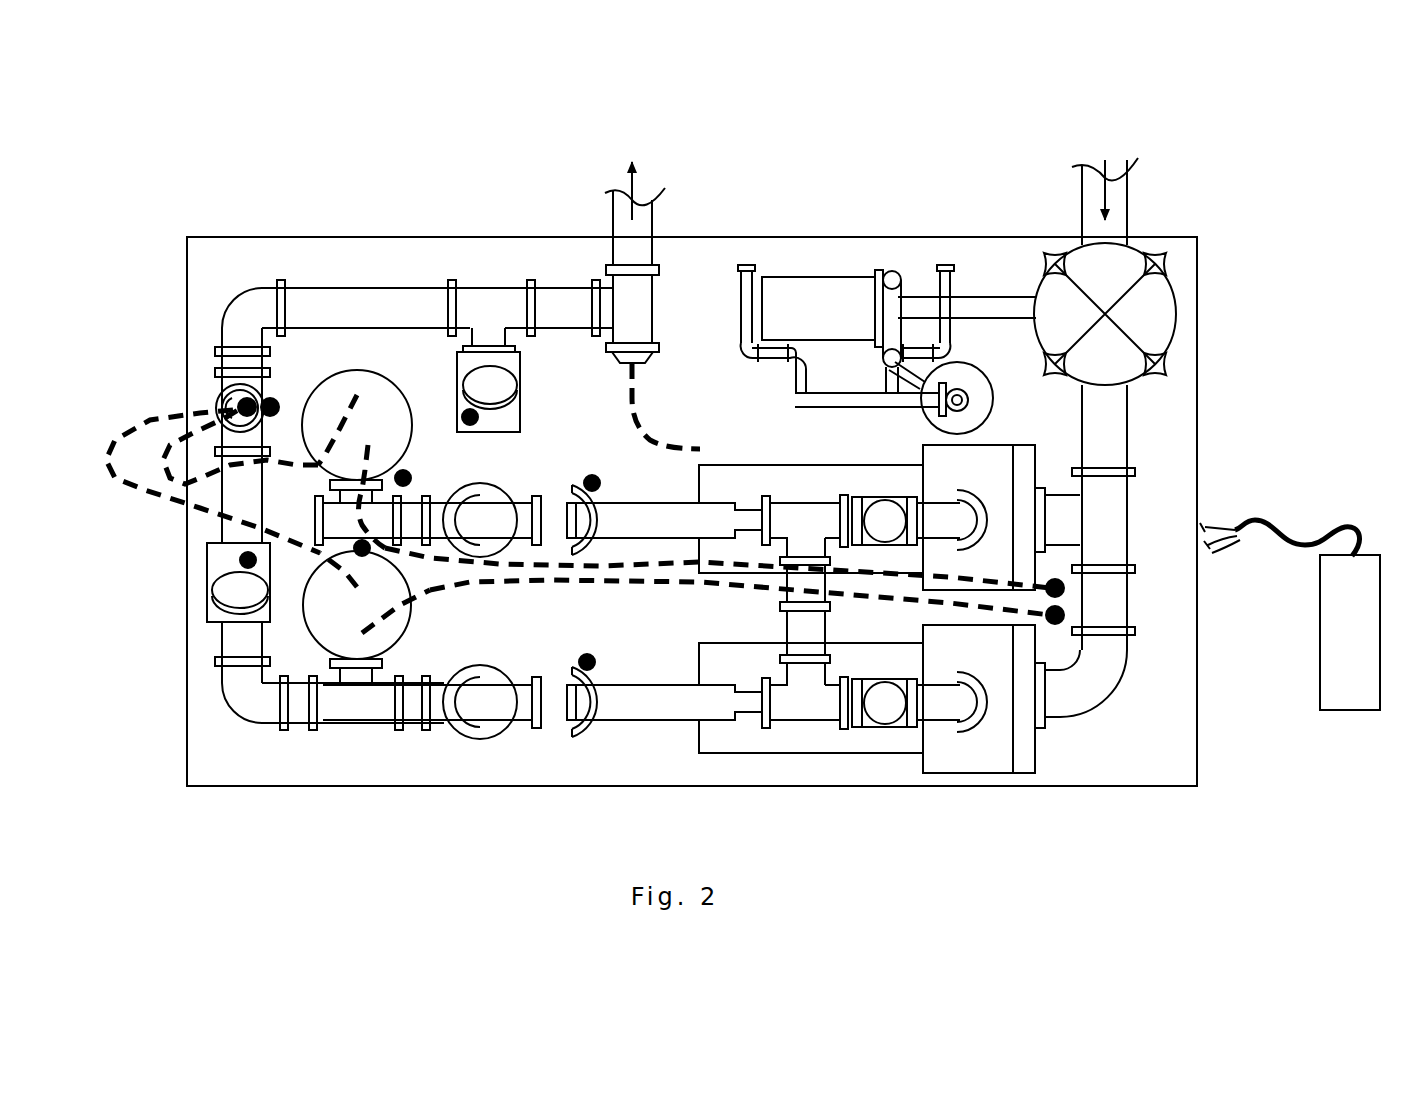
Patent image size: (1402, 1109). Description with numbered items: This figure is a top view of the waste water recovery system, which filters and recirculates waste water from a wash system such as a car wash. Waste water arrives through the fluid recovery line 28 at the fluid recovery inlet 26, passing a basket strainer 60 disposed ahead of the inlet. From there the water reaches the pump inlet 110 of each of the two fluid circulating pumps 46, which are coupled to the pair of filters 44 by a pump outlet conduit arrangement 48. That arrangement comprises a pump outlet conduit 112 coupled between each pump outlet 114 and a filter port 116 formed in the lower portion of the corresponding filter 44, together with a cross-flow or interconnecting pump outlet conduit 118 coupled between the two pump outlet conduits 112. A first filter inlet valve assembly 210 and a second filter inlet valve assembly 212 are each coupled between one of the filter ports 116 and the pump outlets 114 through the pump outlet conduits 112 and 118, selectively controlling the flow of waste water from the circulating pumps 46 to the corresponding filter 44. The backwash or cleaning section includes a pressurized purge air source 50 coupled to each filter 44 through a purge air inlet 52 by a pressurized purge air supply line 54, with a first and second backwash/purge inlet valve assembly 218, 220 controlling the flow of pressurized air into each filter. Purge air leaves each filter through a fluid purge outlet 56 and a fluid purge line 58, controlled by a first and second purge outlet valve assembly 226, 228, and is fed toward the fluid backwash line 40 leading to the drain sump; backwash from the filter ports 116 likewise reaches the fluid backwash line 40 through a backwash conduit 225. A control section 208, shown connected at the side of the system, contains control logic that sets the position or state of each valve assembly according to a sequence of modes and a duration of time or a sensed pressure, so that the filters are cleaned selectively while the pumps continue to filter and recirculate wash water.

The fluid recovery inlet 26 is at (1128, 435).
The fluid recovery line 28 is at (1128, 210).
The fluid backwash line 40 is at (620, 238).
The filter 44 is at (387, 365).
The fluid circulating pump 46 is at (1036, 446).
The pump outlet conduit arrangement 48 is at (643, 727).
The pressurized purge air source 50 is at (1055, 573).
The purge air inlet 52 is at (374, 445).
The pressurized purge air supply line 54 is at (562, 566).
The fluid purge outlet 56 is at (362, 395).
The fluid purge line 58 is at (115, 465).
The basket strainer 60 is at (1177, 313).
The pump inlet 110 is at (1052, 517).
The pump outlet conduit 112 is at (635, 517).
The pump outlet 114 is at (970, 495).
The filter port 116 is at (340, 484).
The interconnecting pump outlet conduit 118 is at (793, 628).
The control section 208 is at (1337, 657).
The first filter inlet valve assembly 210 is at (562, 723).
The second filter inlet valve assembly 212 is at (553, 497).
The first backwash/purge inlet valve assembly 218 is at (235, 593).
The second backwash/purge inlet valve assembly 220 is at (500, 382).
The backwash conduit 225 is at (352, 312).
The first purge outlet valve assembly 226 is at (238, 403).
The second purge outlet valve assembly 228 is at (243, 405).